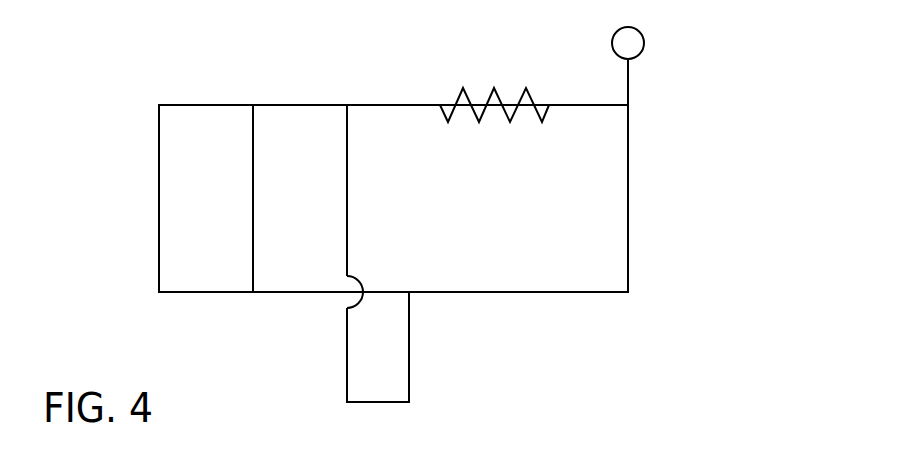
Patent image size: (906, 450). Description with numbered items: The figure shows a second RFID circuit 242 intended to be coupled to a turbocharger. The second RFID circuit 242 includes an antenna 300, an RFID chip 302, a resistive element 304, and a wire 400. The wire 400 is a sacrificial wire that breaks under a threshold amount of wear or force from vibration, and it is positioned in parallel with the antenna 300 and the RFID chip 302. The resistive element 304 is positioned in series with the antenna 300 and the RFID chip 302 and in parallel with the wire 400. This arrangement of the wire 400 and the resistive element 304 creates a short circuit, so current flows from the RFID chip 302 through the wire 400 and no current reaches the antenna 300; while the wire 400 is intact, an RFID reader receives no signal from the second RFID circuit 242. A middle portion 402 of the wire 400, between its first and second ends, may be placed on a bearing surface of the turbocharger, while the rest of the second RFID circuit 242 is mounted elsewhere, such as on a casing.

The second RFID circuit 242 is at (720, 38).
The antenna 300 is at (612, 44).
The RFID chip 302 is at (220, 267).
The resistive element 304 is at (494, 88).
The wire 400 is at (409, 335).
The middle portion 402 is at (311, 386).